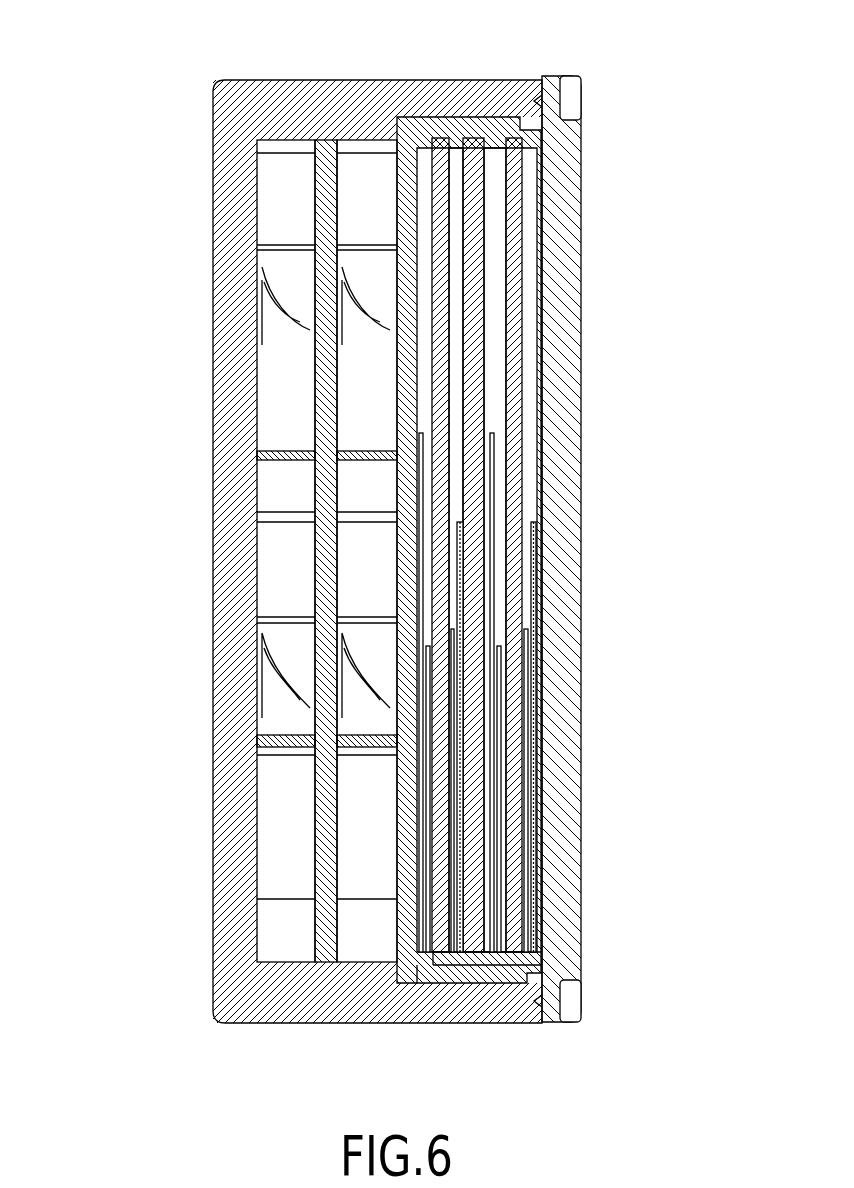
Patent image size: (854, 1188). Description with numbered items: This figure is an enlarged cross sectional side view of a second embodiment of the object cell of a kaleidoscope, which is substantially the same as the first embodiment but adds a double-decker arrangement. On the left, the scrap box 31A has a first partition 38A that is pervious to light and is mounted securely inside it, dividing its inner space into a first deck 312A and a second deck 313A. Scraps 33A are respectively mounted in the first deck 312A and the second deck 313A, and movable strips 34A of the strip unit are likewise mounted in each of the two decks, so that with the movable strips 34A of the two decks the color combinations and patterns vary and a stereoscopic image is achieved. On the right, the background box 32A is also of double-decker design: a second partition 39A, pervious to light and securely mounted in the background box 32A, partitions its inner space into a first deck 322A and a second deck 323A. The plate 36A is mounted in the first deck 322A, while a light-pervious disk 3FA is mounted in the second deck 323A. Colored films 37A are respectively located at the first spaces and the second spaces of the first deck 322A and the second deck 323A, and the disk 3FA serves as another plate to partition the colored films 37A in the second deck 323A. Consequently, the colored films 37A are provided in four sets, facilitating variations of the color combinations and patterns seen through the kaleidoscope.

The scrap box 31A is at (162, 322).
The background box 32A is at (620, 326).
The first deck 312A is at (296, 141).
The second deck 313A is at (377, 137).
The first partition 38A is at (326, 153).
The second partition 39A is at (477, 150).
The plate 36A is at (443, 186).
The disk 3FA is at (510, 183).
The colored films 37A is at (533, 797).
The movable strips 34A is at (286, 456).
The scraps 33A is at (257, 808).
The first deck 322A is at (458, 947).
The second deck 323A is at (487, 947).